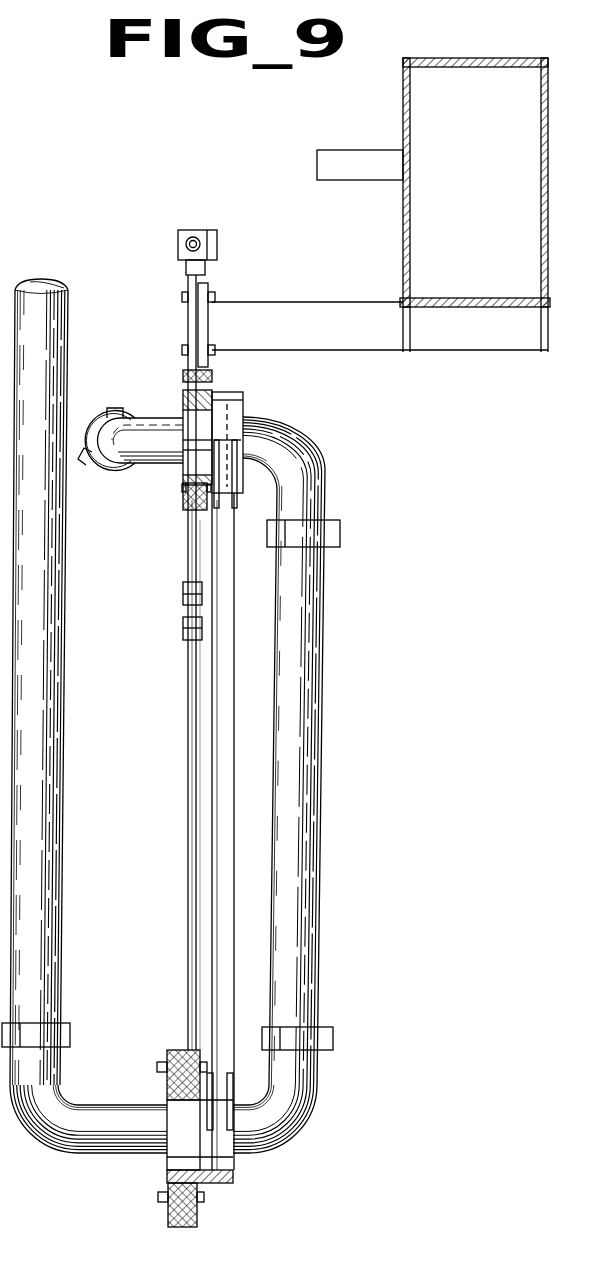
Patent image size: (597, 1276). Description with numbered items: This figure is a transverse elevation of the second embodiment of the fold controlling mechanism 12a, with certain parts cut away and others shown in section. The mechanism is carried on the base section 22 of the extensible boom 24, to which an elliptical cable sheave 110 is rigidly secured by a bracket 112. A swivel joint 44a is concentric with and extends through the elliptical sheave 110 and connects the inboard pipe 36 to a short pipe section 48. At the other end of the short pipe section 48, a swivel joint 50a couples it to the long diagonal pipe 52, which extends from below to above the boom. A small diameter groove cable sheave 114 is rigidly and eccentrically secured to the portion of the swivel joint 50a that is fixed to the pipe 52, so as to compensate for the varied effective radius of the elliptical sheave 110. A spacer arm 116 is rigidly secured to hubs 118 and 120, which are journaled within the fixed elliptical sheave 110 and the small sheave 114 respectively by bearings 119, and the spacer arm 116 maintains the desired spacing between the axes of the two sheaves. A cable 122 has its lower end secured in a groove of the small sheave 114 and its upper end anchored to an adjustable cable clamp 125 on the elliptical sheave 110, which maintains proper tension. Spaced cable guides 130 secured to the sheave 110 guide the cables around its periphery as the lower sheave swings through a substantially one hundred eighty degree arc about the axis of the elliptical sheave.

The fold controlling mechanism 12a is at (180, 772).
The base section 22 is at (403, 220).
The extensible boom 24 is at (398, 98).
The inboard pipe 36 is at (102, 410).
The swivel joint 44a is at (185, 472).
The short pipe section 48 is at (327, 713).
The swivel joint 50a is at (160, 1153).
The long diagonal pipe 52 is at (66, 665).
The elliptical cable sheave 110 is at (188, 548).
The bracket 112 is at (306, 302).
The small diameter groove cable sheave 114 is at (197, 1218).
The spacer arm 116 is at (215, 827).
The hub 118 is at (243, 402).
The bearings 119 is at (167, 1095).
The hub 120 is at (233, 1177).
The cable 122 is at (188, 722).
The adjustable cable clamp 125 is at (194, 230).
The cable guides 130 is at (183, 595).